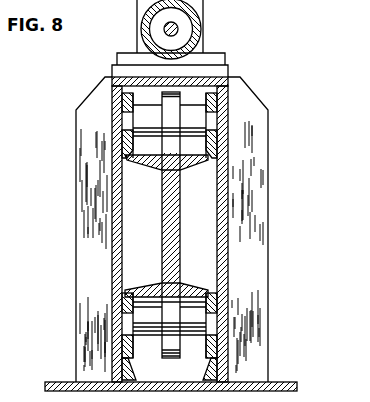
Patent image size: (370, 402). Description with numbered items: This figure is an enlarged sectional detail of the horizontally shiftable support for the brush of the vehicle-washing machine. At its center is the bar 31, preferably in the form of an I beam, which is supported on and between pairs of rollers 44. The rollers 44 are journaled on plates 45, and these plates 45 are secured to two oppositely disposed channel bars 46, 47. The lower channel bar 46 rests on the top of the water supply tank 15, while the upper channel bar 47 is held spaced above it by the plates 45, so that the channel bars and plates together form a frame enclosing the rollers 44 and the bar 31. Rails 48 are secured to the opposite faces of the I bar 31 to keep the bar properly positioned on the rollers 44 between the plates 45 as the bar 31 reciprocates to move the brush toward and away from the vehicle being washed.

The water supply tank 15 is at (296, 388).
The bar 31 is at (175, 222).
The rollers 44 is at (222, 124).
The plates 45 is at (223, 169).
The channel bar 46 is at (212, 373).
The channel bar 47 is at (217, 88).
The rails 48 is at (120, 167).